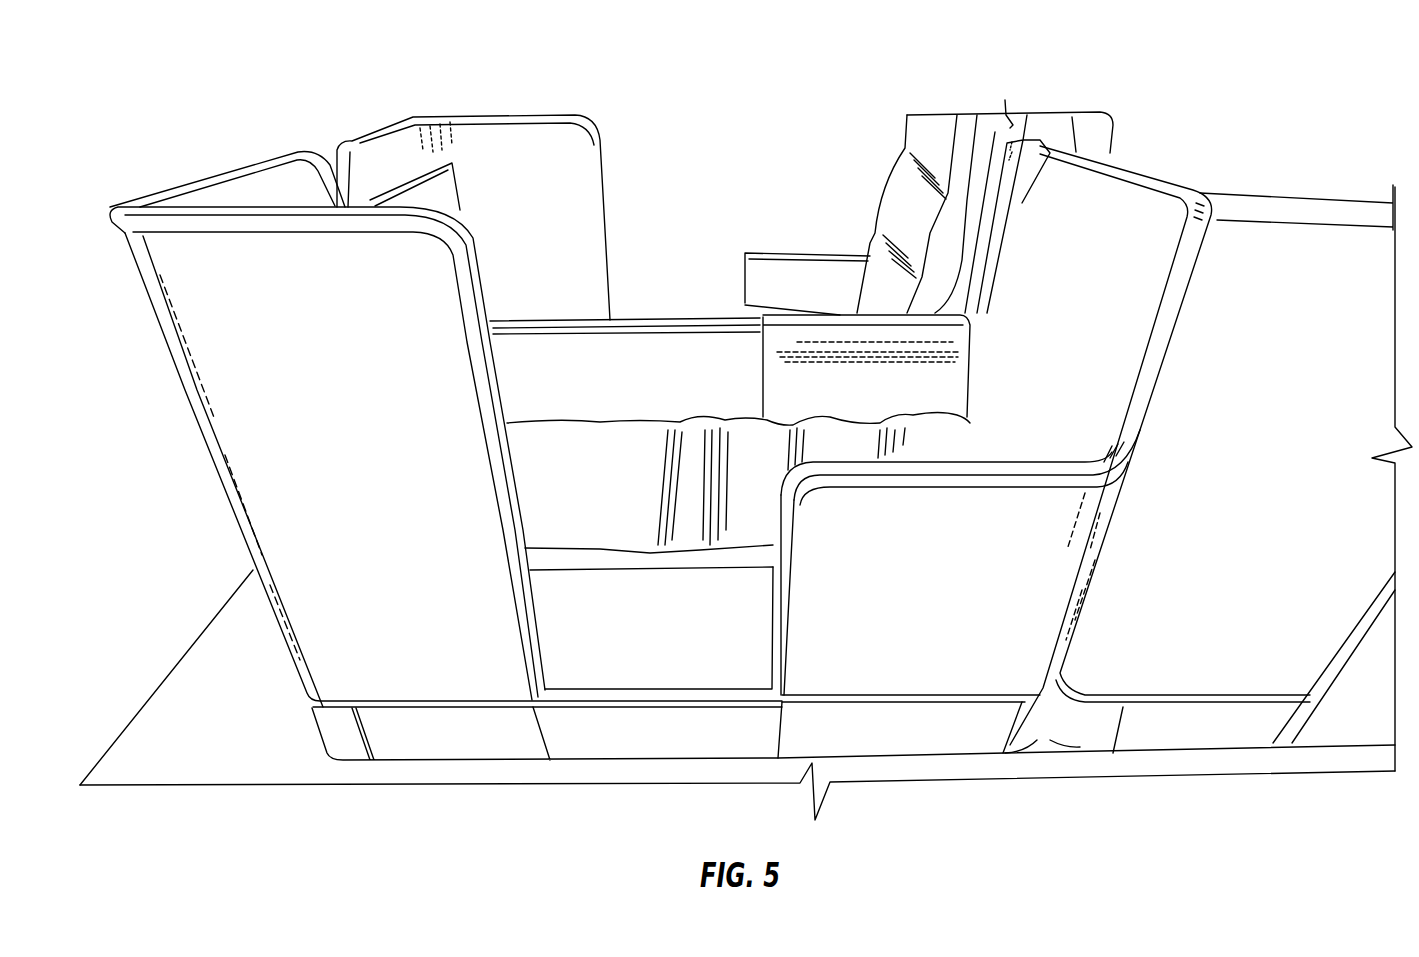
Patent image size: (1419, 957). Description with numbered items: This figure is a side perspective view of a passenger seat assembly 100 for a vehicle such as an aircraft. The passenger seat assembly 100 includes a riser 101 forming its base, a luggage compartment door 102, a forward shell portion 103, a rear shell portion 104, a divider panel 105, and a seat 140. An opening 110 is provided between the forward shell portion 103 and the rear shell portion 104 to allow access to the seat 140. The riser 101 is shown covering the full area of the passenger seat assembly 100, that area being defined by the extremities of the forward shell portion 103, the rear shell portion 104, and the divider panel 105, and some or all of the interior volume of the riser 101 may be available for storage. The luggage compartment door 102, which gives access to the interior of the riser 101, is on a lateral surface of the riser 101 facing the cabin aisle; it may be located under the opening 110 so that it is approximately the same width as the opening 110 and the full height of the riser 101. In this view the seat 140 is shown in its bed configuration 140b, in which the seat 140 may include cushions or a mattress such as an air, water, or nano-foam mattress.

The passenger seat assembly 100 is at (832, 100).
The riser 101 is at (420, 730).
The luggage compartment door 102 is at (735, 730).
The forward shell portion 103 is at (338, 409).
The rear shell portion 104 is at (895, 598).
The divider panel 105 is at (608, 384).
The opening 110 is at (617, 667).
The seat 140 is at (572, 472).
The bed configuration 140b is at (580, 532).